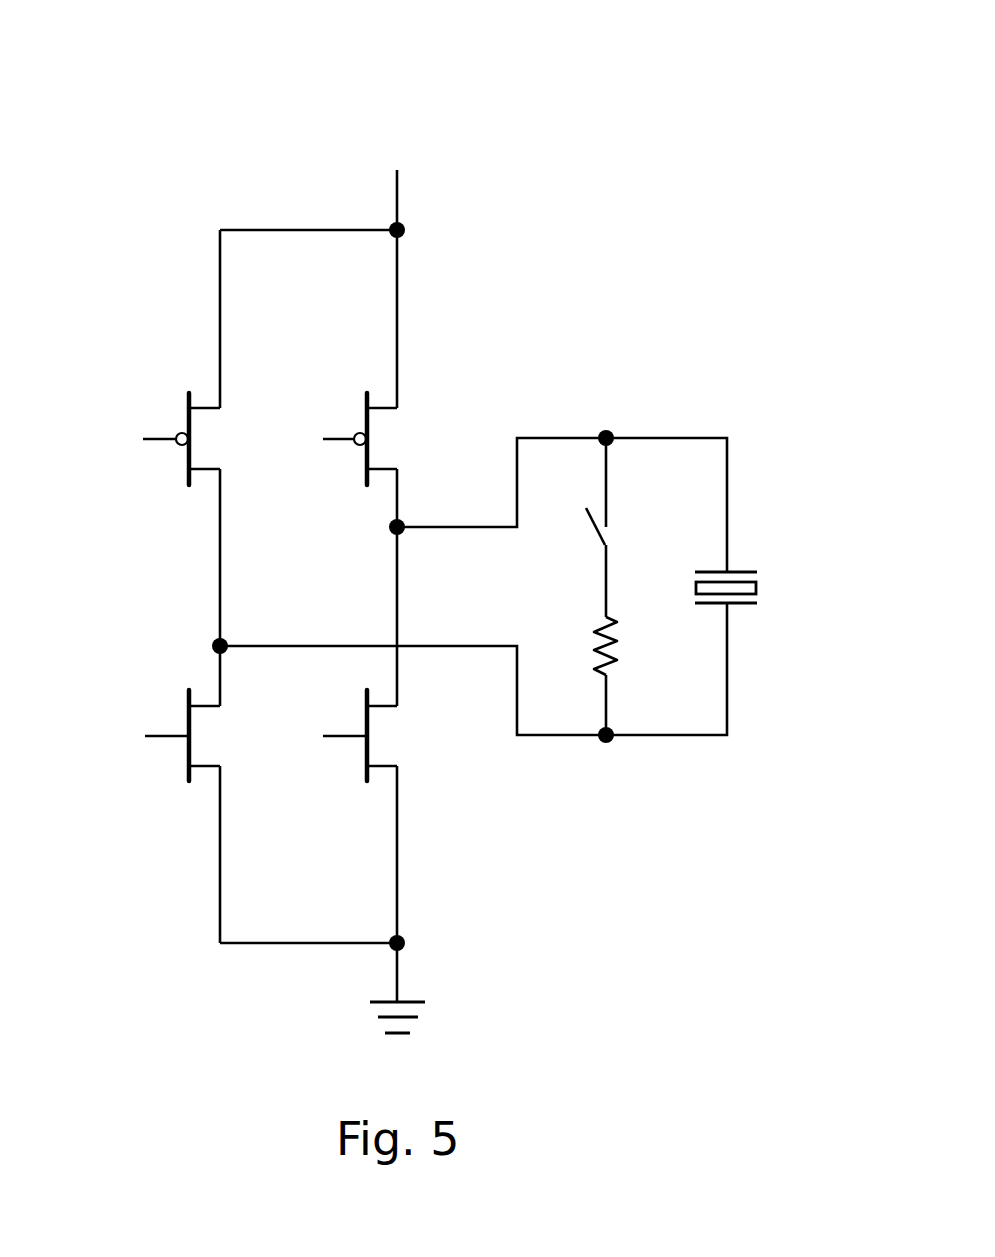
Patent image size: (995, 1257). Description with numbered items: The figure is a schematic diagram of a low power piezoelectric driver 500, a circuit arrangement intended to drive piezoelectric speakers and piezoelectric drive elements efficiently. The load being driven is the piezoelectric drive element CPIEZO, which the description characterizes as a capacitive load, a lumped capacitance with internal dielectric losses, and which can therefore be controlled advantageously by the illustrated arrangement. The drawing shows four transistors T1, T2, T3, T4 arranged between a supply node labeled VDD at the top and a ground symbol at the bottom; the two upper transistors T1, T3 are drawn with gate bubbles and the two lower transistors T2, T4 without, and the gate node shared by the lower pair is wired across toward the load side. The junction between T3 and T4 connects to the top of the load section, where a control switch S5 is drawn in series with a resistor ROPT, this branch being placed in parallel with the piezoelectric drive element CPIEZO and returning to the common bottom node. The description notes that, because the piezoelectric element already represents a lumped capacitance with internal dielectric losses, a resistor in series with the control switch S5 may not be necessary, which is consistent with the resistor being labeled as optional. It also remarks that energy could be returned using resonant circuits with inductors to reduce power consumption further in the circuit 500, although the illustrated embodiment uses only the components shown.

The low power piezoelectric driver 500 is at (163, 172).
The transistor T1 is at (206, 439).
The transistor T2 is at (210, 735).
The transistor T3 is at (385, 439).
The transistor T4 is at (393, 735).
The control switch S5 is at (628, 528).
The optional resistor ROPT is at (650, 646).
The piezoelectric drive element CPIEZO is at (787, 593).
The supply voltage VDD is at (411, 143).